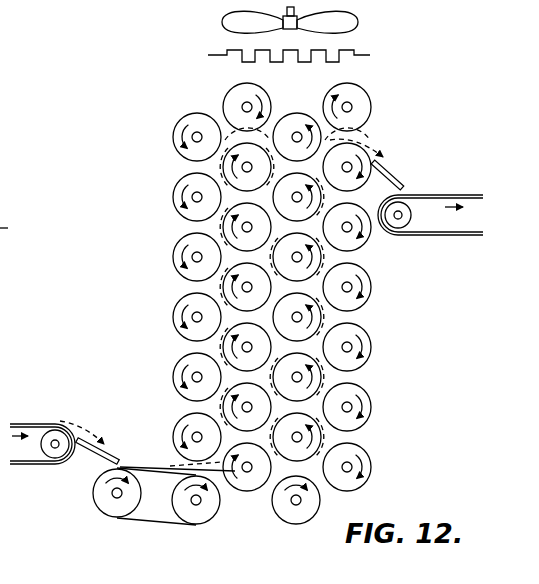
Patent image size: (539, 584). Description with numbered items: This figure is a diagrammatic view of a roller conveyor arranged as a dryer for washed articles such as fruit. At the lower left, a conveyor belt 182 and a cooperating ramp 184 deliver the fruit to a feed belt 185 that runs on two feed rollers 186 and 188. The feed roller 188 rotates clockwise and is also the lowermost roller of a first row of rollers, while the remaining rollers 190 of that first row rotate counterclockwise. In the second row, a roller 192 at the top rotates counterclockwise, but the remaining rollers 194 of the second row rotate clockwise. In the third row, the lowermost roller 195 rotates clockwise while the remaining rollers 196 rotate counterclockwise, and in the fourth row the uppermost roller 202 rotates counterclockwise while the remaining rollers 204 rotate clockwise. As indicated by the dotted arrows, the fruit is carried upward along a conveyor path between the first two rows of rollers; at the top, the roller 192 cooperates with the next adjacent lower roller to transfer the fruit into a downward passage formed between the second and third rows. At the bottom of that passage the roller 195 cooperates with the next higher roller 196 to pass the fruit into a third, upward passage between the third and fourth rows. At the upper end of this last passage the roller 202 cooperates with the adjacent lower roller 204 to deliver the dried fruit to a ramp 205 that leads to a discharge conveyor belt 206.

The conveyor belt 182 is at (26, 424).
The ramp 184 is at (92, 444).
The feed belt 185 is at (143, 467).
The feed roller 186 is at (94, 486).
The feed roller 188 is at (206, 523).
The rollers of the first row 190 is at (187, 239).
The roller at the top of the second row 192 is at (228, 88).
The rollers of the second row 194 is at (239, 492).
The lowermost roller of the third row 195 is at (296, 525).
The rollers of the third row 196 is at (307, 100).
The uppermost roller of the fourth row 202 is at (373, 106).
The rollers of the fourth row 204 is at (362, 383).
The ramp 205 is at (393, 178).
The discharge conveyor belt 206 is at (433, 195).